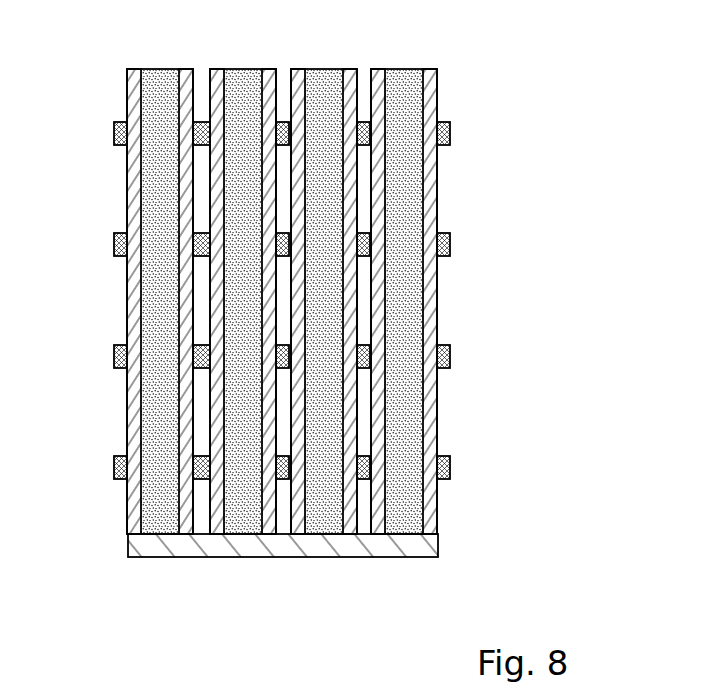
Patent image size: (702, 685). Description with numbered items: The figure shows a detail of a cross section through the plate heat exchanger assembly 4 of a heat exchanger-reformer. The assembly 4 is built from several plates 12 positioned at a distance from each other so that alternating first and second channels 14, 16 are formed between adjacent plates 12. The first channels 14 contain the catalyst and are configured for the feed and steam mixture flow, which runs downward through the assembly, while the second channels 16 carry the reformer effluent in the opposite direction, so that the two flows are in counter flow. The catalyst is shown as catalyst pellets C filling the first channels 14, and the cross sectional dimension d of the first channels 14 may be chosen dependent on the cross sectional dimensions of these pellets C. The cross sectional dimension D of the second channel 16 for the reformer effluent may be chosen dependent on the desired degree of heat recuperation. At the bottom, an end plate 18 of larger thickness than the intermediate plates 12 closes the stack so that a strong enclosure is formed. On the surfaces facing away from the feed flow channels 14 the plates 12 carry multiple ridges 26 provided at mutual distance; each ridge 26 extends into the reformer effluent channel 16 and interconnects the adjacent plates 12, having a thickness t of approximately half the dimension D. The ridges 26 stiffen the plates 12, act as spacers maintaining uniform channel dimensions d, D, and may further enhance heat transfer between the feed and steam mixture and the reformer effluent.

The plate heat exchanger assembly 4 is at (337, 282).
The plates 12 is at (286, 269).
The first channels 14 is at (410, 166).
The second channels 16 is at (370, 207).
The end plates 18 is at (425, 545).
The ridge 26 is at (363, 368).
The catalyst pellets C is at (403, 302).
The thickness of the ridge t is at (82, 420).
The cross sectional dimension of the first channels d is at (108, 594).
The cross sectional dimension of the second channel D is at (276, 538).